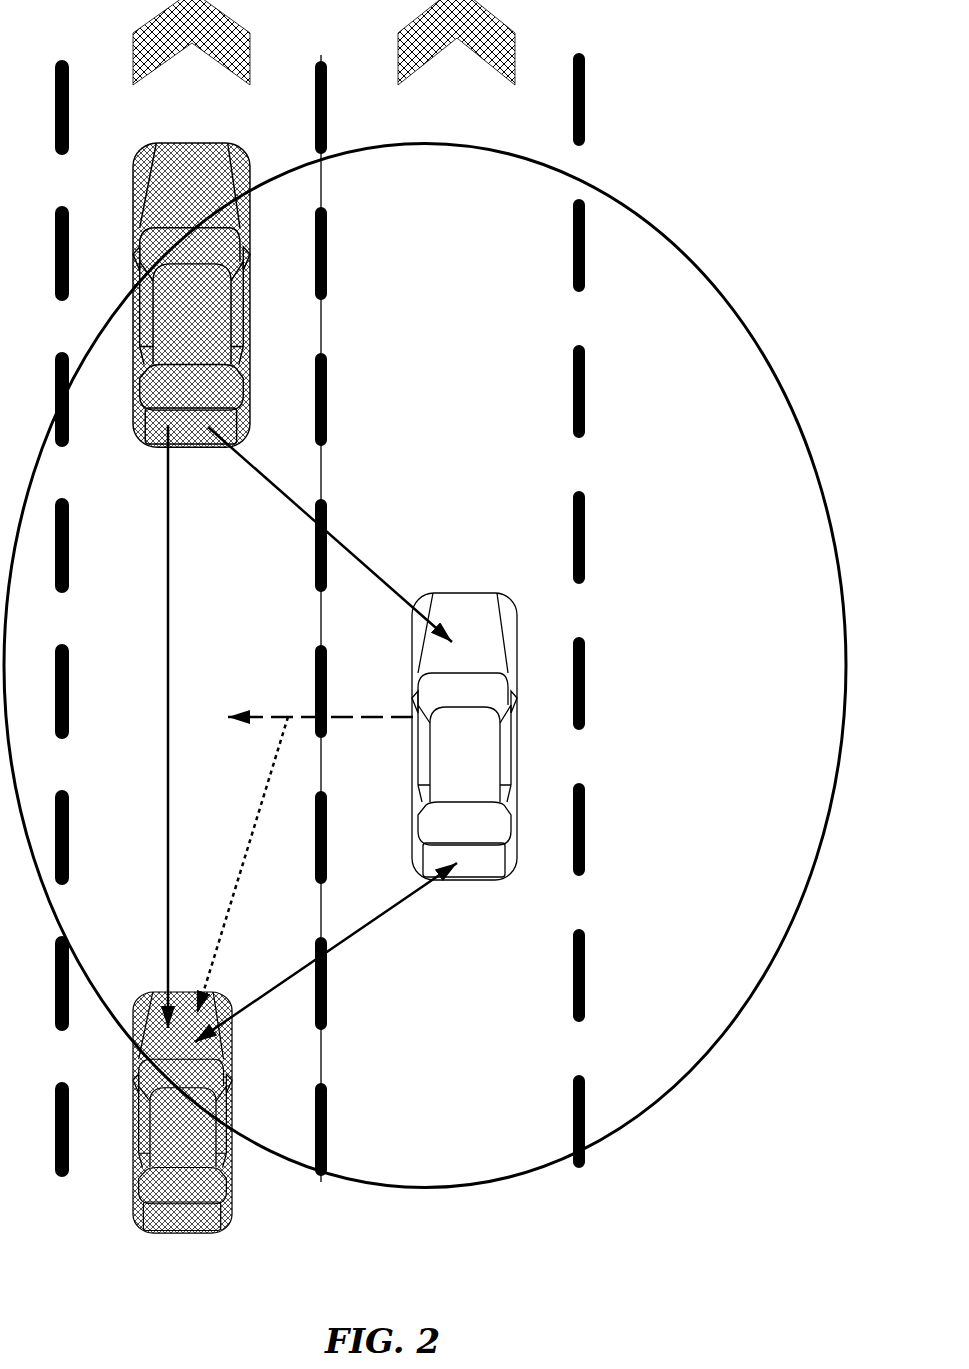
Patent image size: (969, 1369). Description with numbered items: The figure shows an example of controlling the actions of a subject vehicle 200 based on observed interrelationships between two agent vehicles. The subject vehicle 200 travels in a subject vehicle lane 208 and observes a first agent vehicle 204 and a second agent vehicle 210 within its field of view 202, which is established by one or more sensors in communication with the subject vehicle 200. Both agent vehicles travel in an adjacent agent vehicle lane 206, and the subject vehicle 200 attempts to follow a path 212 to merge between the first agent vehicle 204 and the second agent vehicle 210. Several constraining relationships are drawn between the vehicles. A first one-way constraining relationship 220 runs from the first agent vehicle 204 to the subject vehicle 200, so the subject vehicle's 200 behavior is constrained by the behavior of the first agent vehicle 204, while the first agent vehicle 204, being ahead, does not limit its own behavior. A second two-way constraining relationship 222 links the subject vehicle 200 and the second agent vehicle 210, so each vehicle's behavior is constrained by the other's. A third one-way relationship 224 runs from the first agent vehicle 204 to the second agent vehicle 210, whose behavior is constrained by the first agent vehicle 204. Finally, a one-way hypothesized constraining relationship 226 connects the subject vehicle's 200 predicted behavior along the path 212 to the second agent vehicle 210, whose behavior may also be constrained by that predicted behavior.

The subject vehicle 200 is at (464, 736).
The field of view 202 is at (733, 308).
The first agent vehicle 204 is at (191, 295).
The agent vehicle lane 206 is at (90, 618).
The subject vehicle lane 208 is at (348, 618).
The second agent vehicle 210 is at (182, 1112).
The path 212 is at (258, 717).
The first one-way constraining relationship 220 is at (257, 477).
The second two-way constraining relationship 222 is at (385, 913).
The third one-way relationship 224 is at (168, 527).
The one-way hypothesized constraining relationship 226 is at (247, 847).